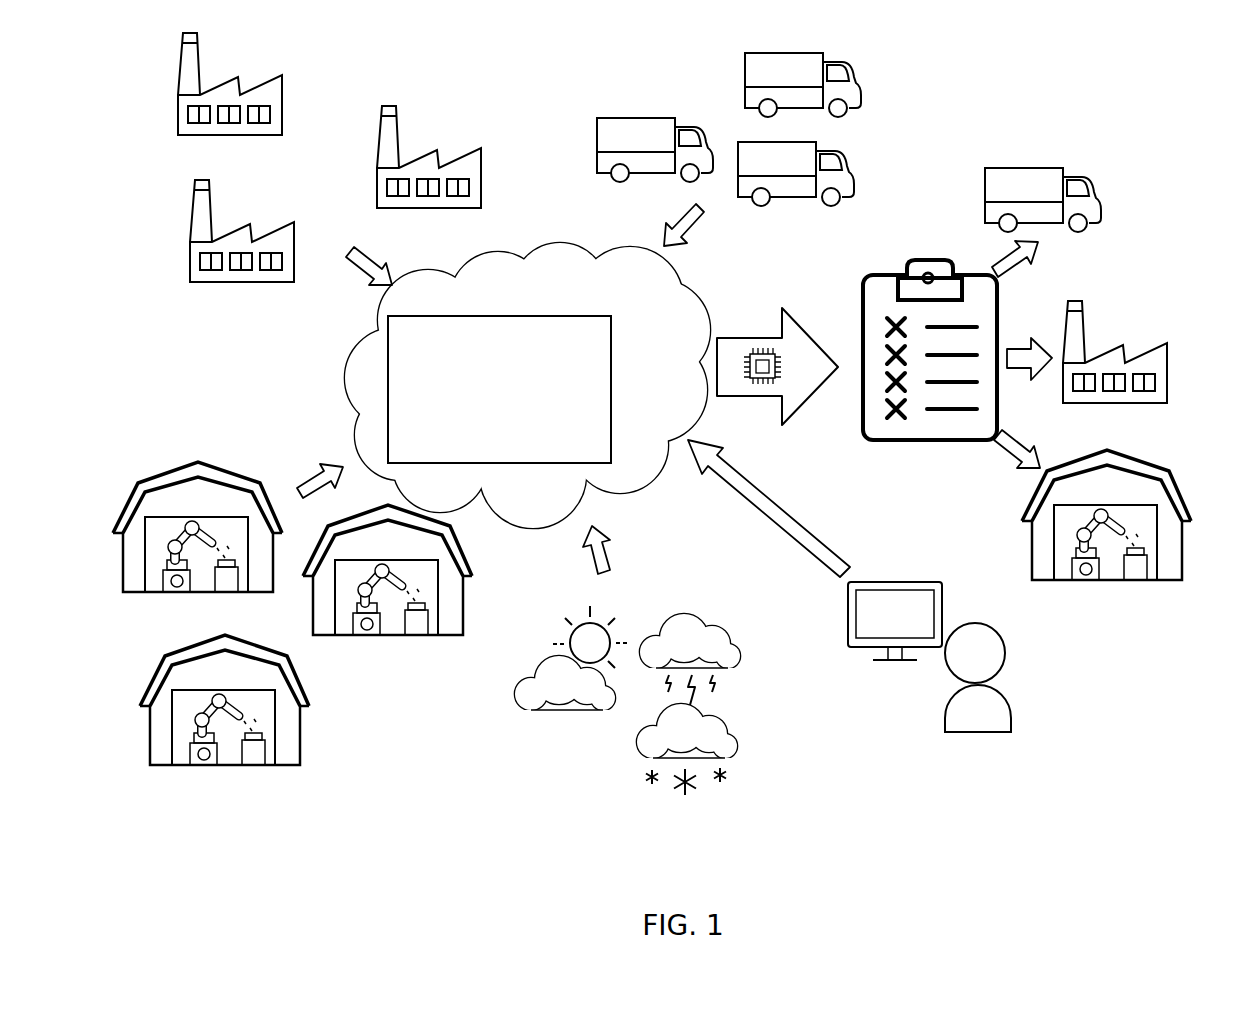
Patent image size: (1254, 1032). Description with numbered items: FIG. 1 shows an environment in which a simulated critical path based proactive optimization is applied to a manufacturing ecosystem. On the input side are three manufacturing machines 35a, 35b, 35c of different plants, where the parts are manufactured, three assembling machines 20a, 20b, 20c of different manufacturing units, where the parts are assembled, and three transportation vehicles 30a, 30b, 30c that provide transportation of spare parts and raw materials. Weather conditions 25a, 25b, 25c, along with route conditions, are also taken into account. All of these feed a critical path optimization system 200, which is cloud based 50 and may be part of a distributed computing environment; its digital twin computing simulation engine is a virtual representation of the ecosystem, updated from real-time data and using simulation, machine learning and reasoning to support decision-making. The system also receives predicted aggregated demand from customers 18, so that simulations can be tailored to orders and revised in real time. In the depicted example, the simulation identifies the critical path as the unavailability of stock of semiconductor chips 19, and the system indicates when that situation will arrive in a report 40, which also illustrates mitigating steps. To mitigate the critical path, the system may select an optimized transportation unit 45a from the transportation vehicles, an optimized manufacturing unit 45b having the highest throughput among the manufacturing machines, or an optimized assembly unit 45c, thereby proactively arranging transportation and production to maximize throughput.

The customers 18 is at (1012, 707).
The semiconductor chips 19 is at (768, 360).
The assembling machine 20a is at (463, 614).
The assembling machine 20b is at (200, 462).
The assembling machine 20c is at (300, 741).
The weather condition 25a is at (713, 620).
The weather condition 25b is at (710, 715).
The weather condition 25c is at (598, 623).
The transportation vehicle 30a is at (858, 80).
The transportation vehicle 30b is at (625, 118).
The transportation vehicle 30c is at (857, 183).
The manufacturing machine 35a is at (238, 78).
The manufacturing machine 35b is at (249, 223).
The manufacturing machine 35c is at (437, 149).
The report 40 is at (861, 424).
The optimized transportation unit 45a is at (1028, 168).
The optimized manufacturing unit 45b is at (1126, 343).
The optimized assembly unit 45c is at (1152, 466).
The cloud 50 is at (545, 304).
The critical path optimization system 200 is at (569, 431).